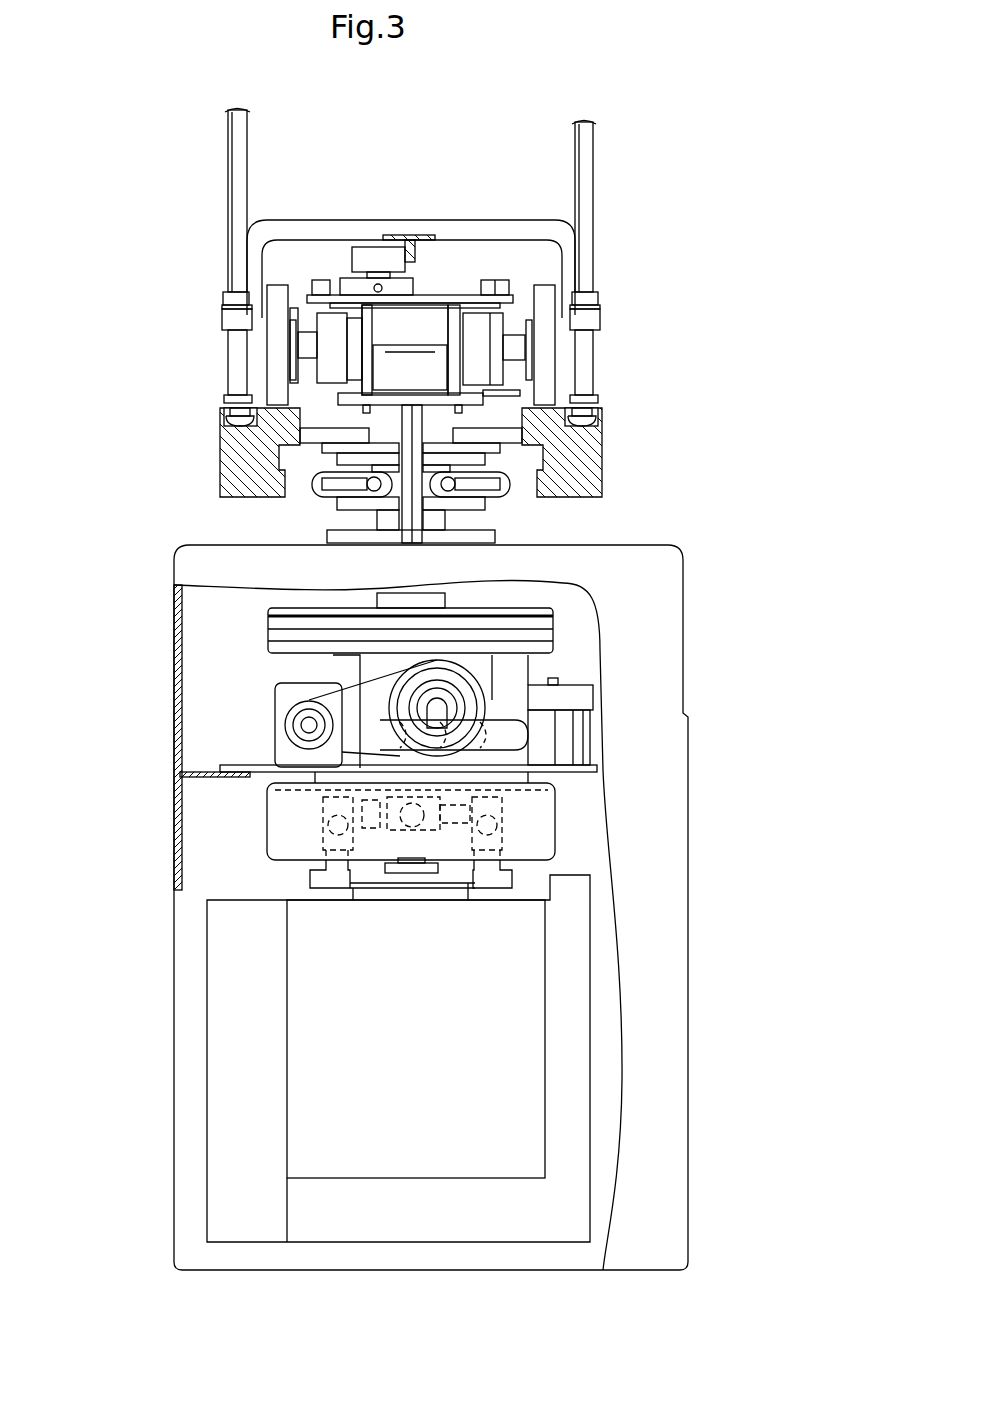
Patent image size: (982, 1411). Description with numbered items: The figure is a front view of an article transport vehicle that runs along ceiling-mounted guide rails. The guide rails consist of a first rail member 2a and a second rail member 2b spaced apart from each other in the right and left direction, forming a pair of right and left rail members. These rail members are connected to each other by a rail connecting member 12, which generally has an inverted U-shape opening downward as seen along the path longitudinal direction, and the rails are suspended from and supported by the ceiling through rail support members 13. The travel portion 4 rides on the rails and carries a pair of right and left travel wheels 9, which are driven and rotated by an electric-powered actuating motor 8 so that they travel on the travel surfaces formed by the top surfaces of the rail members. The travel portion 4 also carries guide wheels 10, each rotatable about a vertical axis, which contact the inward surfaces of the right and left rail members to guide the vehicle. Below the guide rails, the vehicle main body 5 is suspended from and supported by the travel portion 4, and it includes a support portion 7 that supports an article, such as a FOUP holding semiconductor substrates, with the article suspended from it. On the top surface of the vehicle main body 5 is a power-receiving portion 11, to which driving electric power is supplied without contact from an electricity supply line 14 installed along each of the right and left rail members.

The rail support member 13 is at (236, 167).
The travel portion 4 is at (522, 252).
The rail connecting member 12 is at (372, 228).
The actuating motor 8 is at (352, 327).
The travel wheel 9 is at (276, 291).
The guide wheel 10 is at (322, 432).
The electricity supply line 14 is at (340, 486).
The second rail member 2b is at (232, 440).
The first rail member 2a is at (603, 440).
The power-receiving portion 11 is at (463, 512).
The vehicle main body 5 is at (125, 650).
The support portion 7 is at (290, 832).